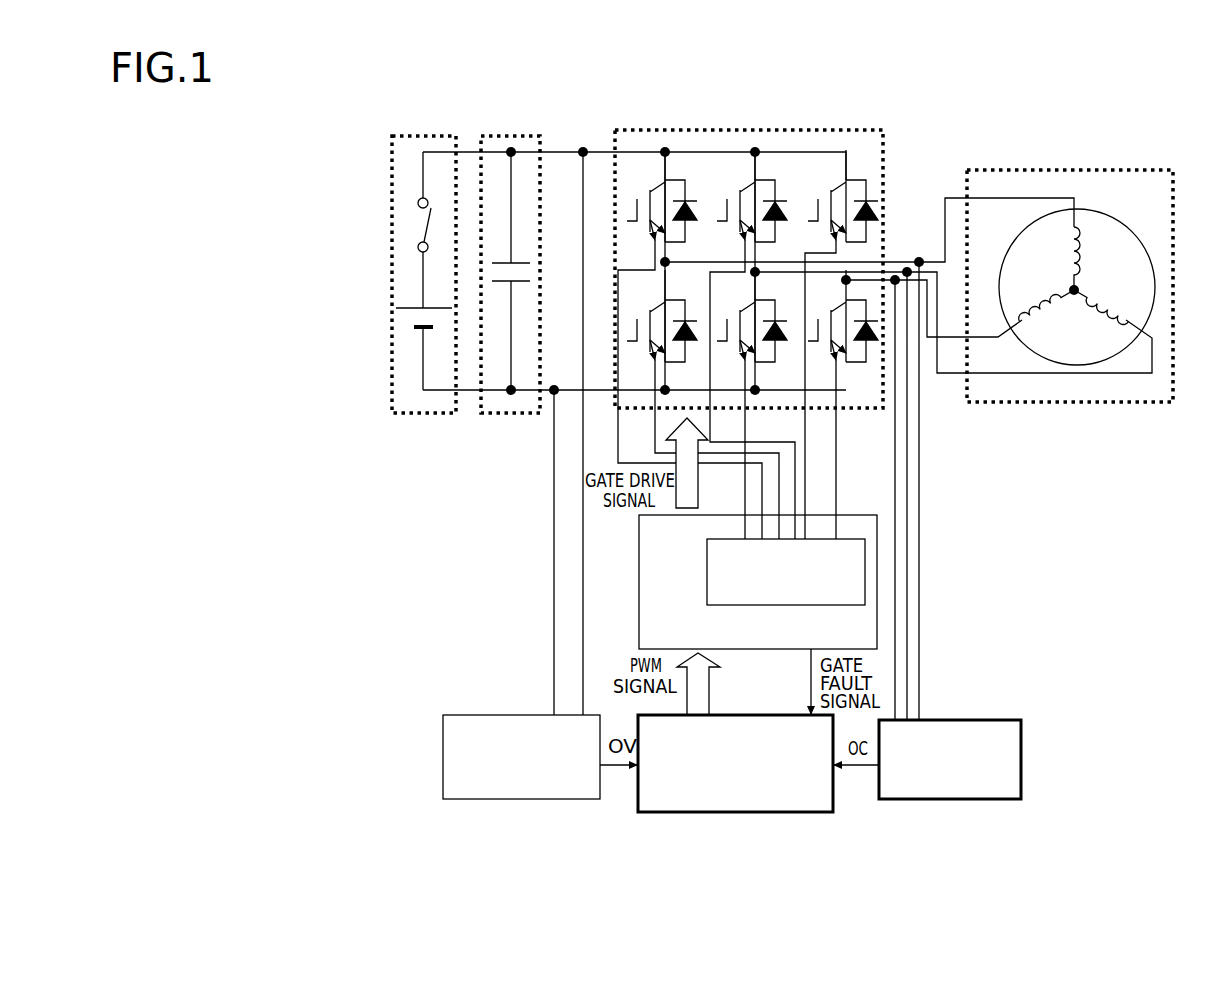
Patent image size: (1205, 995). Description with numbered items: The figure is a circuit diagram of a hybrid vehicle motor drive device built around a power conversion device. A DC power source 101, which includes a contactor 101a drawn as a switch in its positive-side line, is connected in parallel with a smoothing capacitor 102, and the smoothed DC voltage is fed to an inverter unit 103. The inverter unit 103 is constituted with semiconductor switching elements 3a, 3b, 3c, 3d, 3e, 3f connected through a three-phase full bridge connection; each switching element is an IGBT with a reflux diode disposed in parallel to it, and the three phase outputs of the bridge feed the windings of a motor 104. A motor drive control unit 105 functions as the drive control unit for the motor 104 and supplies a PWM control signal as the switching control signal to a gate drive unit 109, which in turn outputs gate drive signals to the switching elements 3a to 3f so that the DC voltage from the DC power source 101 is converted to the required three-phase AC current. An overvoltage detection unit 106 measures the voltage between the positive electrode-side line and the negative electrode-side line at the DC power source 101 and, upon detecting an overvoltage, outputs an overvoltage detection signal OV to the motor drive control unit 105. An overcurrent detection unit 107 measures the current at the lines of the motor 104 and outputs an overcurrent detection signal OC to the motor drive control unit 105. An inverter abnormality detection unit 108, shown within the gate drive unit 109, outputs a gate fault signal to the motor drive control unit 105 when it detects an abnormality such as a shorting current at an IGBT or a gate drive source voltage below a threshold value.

The DC power source 101 is at (420, 136).
The contactor 101a is at (423, 223).
The smoothing capacitor 102 is at (514, 136).
The inverter unit 103 is at (699, 130).
The semiconductor switching element 3a is at (662, 196).
The semiconductor switching element 3b is at (752, 196).
The semiconductor switching element 3c is at (843, 196).
The semiconductor switching element 3d is at (662, 316).
The semiconductor switching element 3e is at (752, 316).
The semiconductor switching element 3f is at (843, 316).
The motor 104 is at (1075, 170).
The motor drive control unit 105 is at (700, 813).
The overvoltage detection unit 106 is at (560, 800).
The overcurrent detection unit 107 is at (912, 800).
The inverter abnormality detection unit 108 is at (707, 570).
The gate drive unit 109 is at (868, 515).